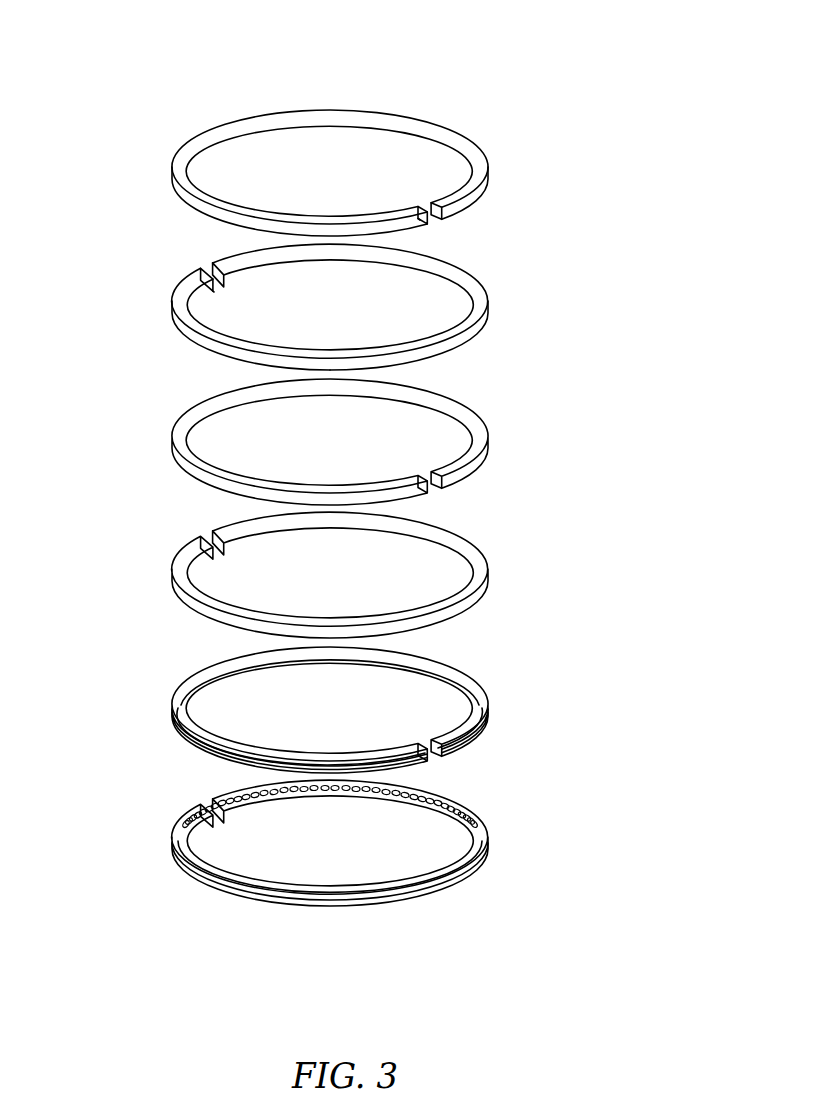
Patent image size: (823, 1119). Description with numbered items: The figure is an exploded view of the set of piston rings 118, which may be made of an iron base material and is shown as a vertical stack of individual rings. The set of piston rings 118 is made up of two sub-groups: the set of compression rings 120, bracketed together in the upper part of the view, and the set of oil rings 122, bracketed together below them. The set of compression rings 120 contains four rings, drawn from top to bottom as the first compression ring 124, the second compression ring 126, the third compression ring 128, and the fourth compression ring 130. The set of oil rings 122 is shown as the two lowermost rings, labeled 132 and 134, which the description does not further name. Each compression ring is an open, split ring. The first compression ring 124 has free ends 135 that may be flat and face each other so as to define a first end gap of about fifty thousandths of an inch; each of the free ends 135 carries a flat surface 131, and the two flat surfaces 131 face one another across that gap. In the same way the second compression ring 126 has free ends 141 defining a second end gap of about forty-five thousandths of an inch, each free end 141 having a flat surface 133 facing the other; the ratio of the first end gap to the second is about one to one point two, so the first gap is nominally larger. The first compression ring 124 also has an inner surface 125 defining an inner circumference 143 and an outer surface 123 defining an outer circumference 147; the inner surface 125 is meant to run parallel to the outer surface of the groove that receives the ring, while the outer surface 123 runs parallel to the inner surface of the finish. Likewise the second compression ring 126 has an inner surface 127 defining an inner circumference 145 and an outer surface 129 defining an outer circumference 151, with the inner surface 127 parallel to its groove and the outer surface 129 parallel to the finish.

The set of piston rings 118 is at (408, 460).
The set of compression rings 120 is at (394, 341).
The set of oil rings 122 is at (423, 776).
The first compression ring 124 is at (330, 143).
The second compression ring 126 is at (337, 310).
The third compression ring 128 is at (384, 442).
The fourth compression ring 130 is at (384, 575).
The oil control ring 132 is at (384, 710).
The expander spring 134 is at (384, 843).
The free ends 135 is at (467, 155).
The flat surface 131 is at (480, 229).
The flat surface 133 is at (244, 292).
The free ends 141 is at (178, 284).
The inner circumference 143 is at (330, 134).
The inner circumference 145 is at (280, 301).
The outer circumference 147 is at (242, 195).
The outer circumference 151 is at (213, 335).
The outer surface 123 is at (285, 193).
The inner surface 125 is at (368, 170).
The inner surface 127 is at (343, 293).
The outer surface 129 is at (425, 343).